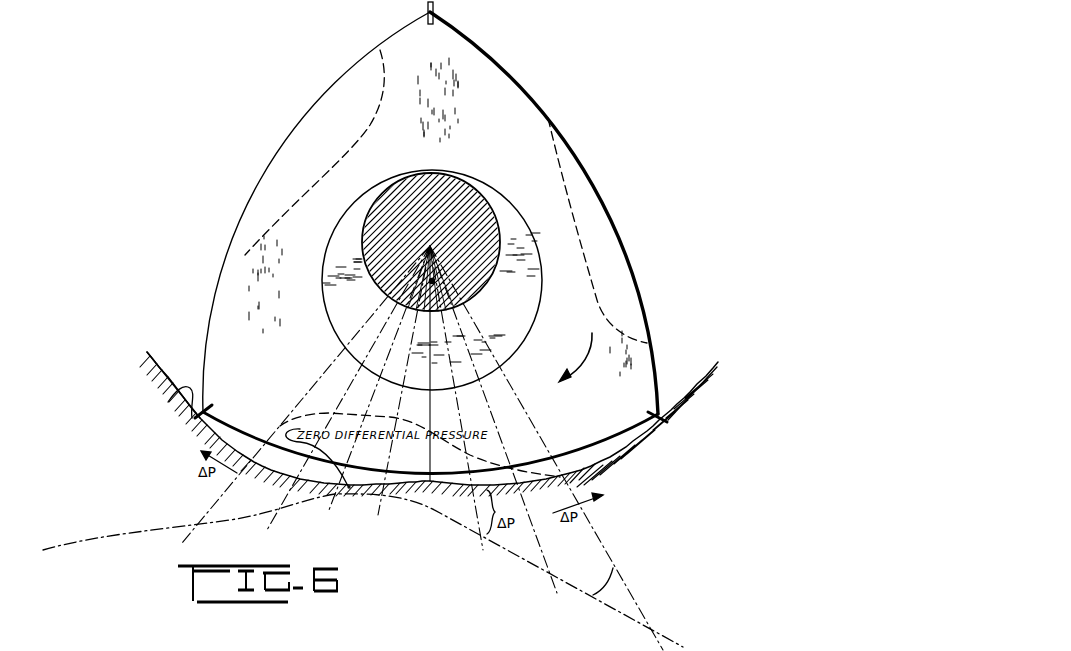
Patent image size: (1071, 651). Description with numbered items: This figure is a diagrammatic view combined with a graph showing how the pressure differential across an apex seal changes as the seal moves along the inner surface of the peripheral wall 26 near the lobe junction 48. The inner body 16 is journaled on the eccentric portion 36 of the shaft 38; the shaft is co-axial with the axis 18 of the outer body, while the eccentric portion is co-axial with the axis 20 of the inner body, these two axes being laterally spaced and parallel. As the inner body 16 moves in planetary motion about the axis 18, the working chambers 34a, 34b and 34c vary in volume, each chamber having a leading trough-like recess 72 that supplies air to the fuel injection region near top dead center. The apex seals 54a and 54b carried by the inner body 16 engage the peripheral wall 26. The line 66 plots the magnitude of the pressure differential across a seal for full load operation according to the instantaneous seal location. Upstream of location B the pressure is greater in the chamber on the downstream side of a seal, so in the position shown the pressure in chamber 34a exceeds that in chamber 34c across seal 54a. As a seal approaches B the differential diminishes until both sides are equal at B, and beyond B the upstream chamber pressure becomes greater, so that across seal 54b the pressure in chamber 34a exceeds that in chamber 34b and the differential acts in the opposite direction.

The inner body 16 is at (621, 224).
The axis of the outer body 18 is at (430, 244).
The axis of the inner body 20 is at (441, 276).
The peripheral wall 26 is at (168, 402).
The working chamber 34a is at (541, 473).
The working chamber 34b is at (180, 369).
The working chamber 34c is at (684, 381).
The eccentric portion of the shaft 36 is at (362, 319).
The shaft 38 is at (488, 285).
The lobe junction 48 is at (430, 483).
The apex seal 54a is at (664, 420).
The apex seal 54b is at (197, 420).
The pressure differential line 66 is at (619, 576).
The trough-like recess 72 is at (385, 100).
The location B is at (350, 490).